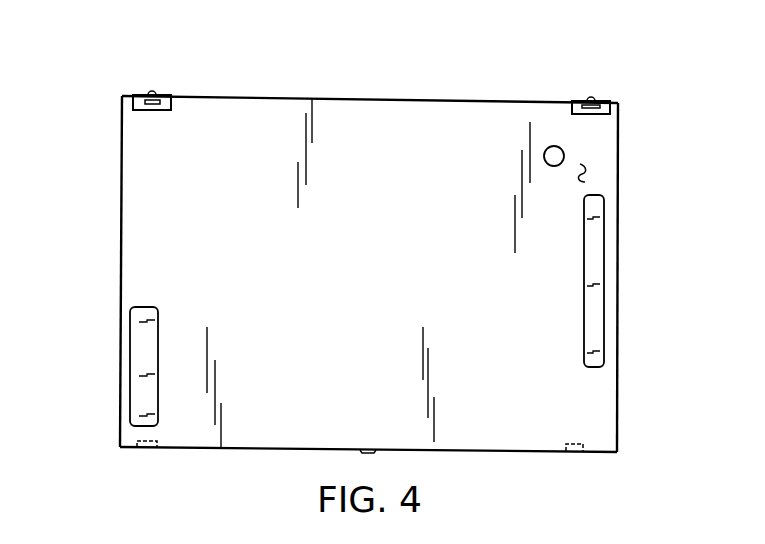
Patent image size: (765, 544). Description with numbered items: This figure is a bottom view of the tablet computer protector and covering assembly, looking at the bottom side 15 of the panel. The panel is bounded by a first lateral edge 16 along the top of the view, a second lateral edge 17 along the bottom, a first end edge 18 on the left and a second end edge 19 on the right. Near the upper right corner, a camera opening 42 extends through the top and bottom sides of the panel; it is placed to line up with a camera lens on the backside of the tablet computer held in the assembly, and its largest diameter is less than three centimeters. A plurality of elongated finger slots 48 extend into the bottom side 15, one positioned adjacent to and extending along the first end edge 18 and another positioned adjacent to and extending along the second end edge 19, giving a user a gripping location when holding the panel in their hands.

The bottom side 15 is at (584, 172).
The first lateral edge 16 is at (429, 100).
The second lateral edge 17 is at (488, 450).
The first end edge 18 is at (121, 365).
The second end edge 19 is at (617, 258).
The camera opening 42 is at (564, 150).
The finger slots 48 is at (146, 317).